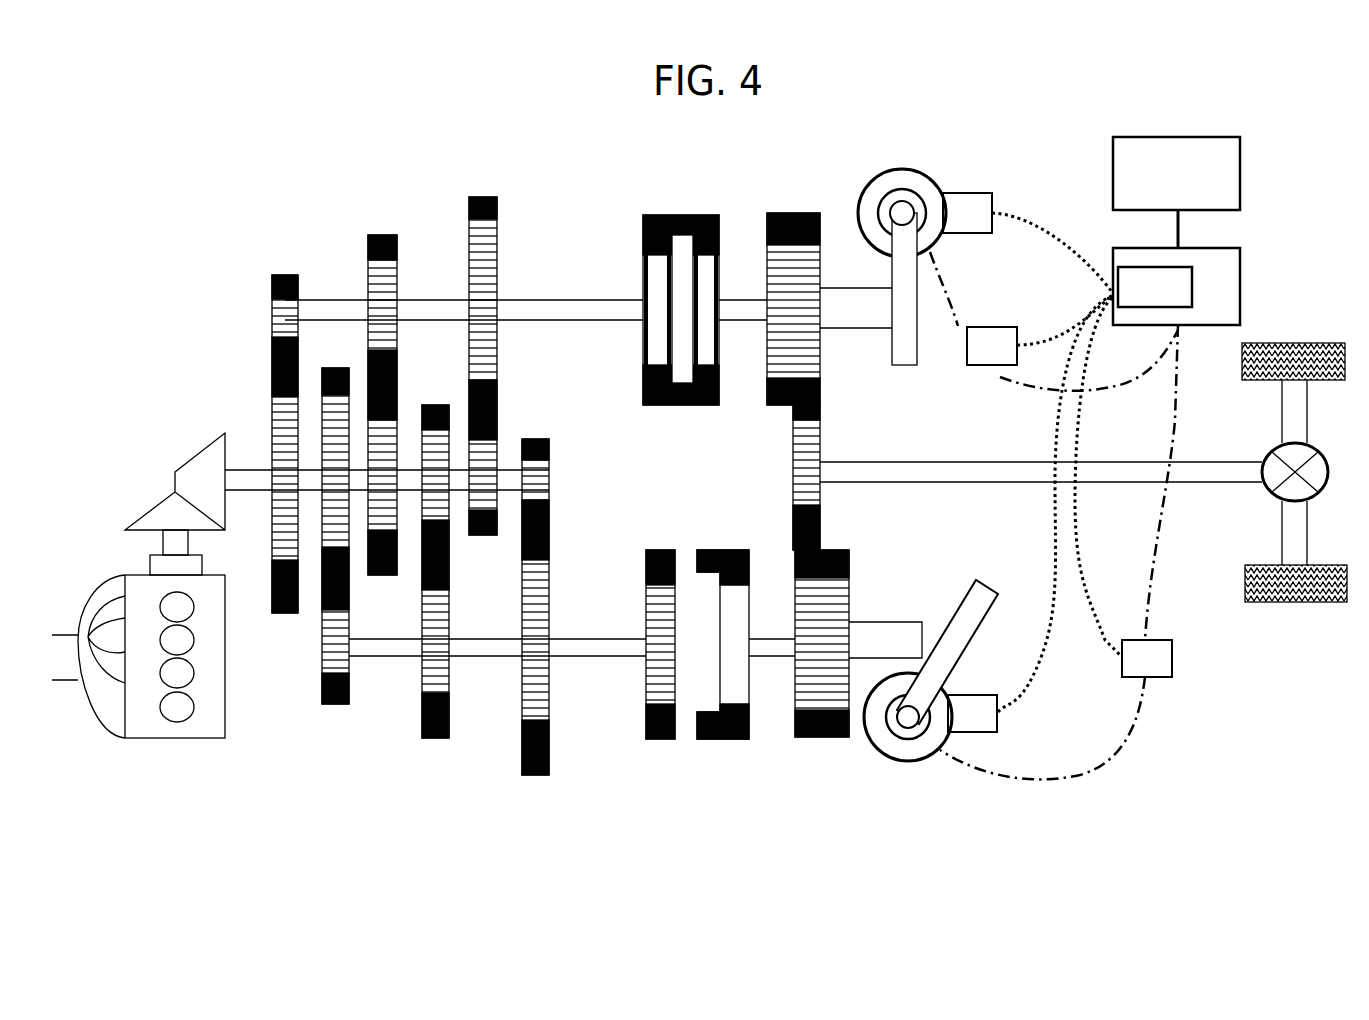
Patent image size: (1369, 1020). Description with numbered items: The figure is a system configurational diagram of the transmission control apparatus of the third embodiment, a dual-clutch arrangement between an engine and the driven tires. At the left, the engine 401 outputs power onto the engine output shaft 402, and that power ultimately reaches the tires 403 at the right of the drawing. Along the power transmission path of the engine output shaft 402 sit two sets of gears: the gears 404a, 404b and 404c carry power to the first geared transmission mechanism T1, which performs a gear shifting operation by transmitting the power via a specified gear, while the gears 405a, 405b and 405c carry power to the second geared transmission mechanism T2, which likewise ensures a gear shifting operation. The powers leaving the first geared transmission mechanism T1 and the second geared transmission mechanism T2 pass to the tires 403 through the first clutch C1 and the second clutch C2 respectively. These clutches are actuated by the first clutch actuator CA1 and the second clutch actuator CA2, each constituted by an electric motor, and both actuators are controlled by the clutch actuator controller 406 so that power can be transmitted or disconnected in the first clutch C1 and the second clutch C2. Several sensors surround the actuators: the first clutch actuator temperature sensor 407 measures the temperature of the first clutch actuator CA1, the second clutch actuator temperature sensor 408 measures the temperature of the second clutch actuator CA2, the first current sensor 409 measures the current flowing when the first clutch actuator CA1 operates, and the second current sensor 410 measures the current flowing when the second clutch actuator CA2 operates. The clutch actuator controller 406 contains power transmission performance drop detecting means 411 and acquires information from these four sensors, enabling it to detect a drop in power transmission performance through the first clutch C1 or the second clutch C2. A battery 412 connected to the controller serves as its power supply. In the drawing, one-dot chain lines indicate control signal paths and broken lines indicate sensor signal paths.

The engine 401 is at (175, 738).
The engine output shaft 402 is at (163, 540).
The tires 403 is at (1292, 602).
The gear 404a is at (272, 352).
The gear 404b is at (397, 385).
The gear 404c is at (497, 440).
The gear 405a is at (349, 580).
The gear 405b is at (449, 533).
The gear 405c is at (549, 488).
The clutch actuator controller 406 is at (1243, 308).
The first clutch actuator temperature sensor 407 is at (985, 193).
The second clutch actuator temperature sensor 408 is at (997, 725).
The first current sensor 409 is at (977, 365).
The second current sensor 410 is at (1170, 665).
The power transmission performance drop detecting means 411 is at (1192, 283).
The battery 412 is at (1243, 172).
The first geared transmission mechanism T1 is at (568, 198).
The second geared transmission mechanism T2 is at (278, 792).
The first clutch C1 is at (618, 198).
The second clutch C2 is at (626, 770).
The first clutch actuator CA1 is at (897, 170).
The second clutch actuator CA2 is at (903, 757).